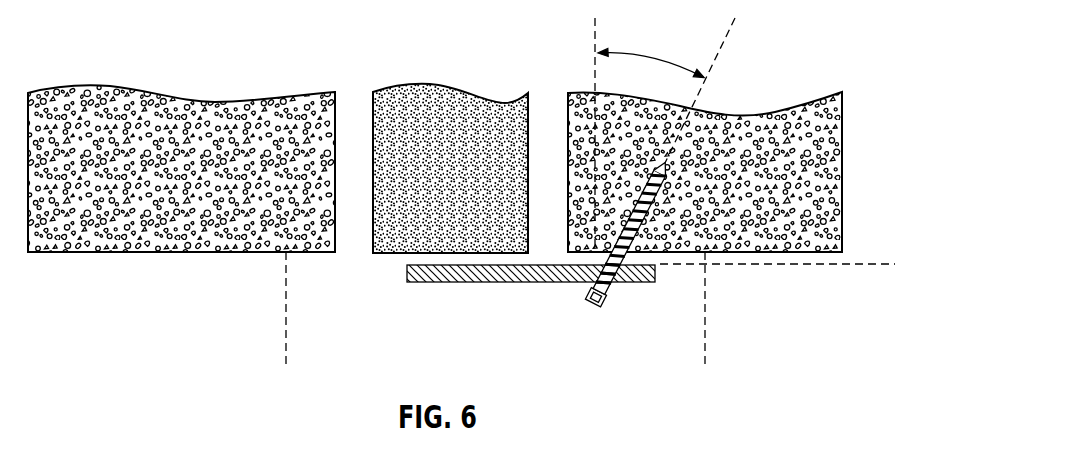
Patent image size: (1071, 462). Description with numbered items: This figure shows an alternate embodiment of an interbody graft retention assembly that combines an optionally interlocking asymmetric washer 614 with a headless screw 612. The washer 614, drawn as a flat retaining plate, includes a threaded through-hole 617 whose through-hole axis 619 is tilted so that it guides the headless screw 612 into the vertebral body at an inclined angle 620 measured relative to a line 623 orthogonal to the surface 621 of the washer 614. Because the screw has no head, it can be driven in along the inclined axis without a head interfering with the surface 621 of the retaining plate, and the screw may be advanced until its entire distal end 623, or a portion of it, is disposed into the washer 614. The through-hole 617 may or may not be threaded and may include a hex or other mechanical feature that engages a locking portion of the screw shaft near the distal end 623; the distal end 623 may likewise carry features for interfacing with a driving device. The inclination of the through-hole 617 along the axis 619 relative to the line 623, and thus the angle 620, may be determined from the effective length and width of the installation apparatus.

The headless screw 612 is at (655, 192).
The plate 614 is at (407, 272).
The threaded through-hole 617 is at (612, 284).
The through-hole axis 619 is at (722, 42).
The inclined angle 620 is at (625, 53).
The surface of the washer 621 is at (818, 266).
The line orthogonal to the washer surface 623 is at (594, 45).